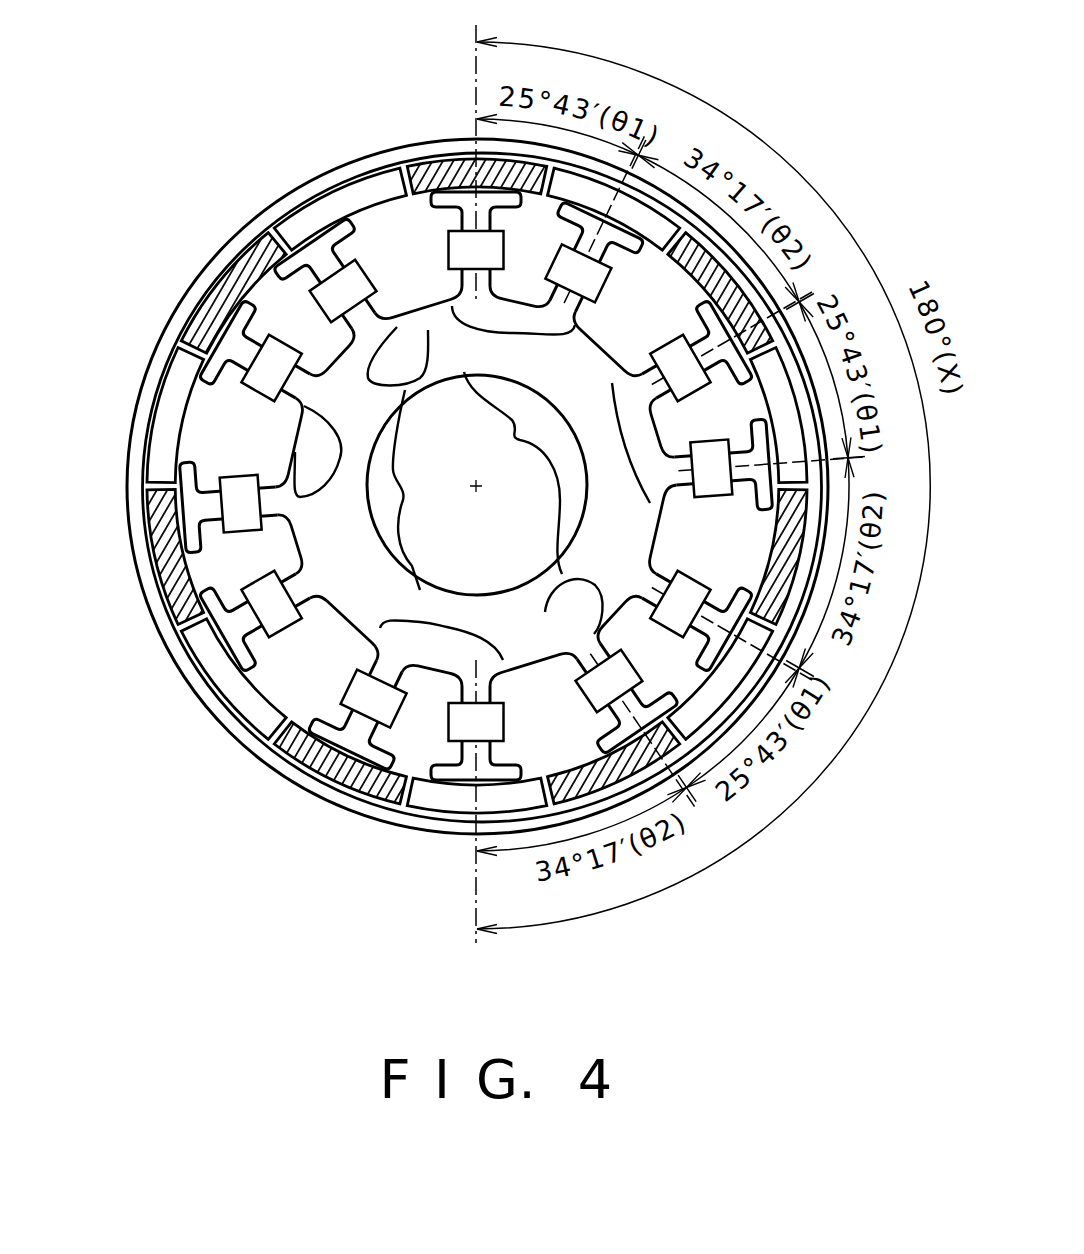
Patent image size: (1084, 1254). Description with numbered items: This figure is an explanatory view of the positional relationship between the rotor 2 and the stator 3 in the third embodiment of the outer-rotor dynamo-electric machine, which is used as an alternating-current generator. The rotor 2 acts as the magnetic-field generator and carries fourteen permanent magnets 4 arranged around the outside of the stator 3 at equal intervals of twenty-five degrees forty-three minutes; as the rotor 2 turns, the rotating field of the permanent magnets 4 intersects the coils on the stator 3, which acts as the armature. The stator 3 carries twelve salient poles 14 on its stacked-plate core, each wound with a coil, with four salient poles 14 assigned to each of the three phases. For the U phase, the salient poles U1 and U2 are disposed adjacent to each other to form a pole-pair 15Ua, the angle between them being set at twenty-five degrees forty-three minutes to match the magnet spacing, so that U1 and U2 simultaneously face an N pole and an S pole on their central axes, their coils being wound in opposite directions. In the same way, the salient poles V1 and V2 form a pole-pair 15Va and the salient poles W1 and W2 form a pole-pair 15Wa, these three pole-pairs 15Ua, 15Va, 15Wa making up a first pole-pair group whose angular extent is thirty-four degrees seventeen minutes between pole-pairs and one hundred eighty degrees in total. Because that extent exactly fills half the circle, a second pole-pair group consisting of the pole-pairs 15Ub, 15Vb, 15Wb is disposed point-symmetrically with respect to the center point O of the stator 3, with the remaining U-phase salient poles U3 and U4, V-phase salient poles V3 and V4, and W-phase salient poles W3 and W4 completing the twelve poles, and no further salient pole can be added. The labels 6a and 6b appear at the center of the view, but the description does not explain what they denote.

The rotor 2 is at (233, 723).
The stator 3 is at (342, 438).
The permanent magnet 4 is at (350, 163).
The salient pole 14 is at (314, 258).
The rotor magnet portion 6a is at (477, 483).
The rotor magnet portion 6b is at (424, 490).
The center point O is at (487, 500).
The pole-pair 15Ua is at (513, 333).
The pole-pair 15Ub is at (447, 627).
The pole-pair 15Va is at (622, 443).
The pole-pair 15Vb is at (325, 451).
The pole-pair 15Wa is at (550, 545).
The pole-pair 15Wb is at (428, 330).
The salient pole U1 is at (476, 239).
The salient pole U2 is at (603, 221).
The coil U3 is at (476, 733).
The coil U4 is at (369, 709).
The salient pole V1 is at (731, 339).
The salient pole V2 is at (769, 464).
The coil V3 is at (262, 609).
The coil V4 is at (229, 504).
The salient pole W1 is at (731, 633).
The salient pole W2 is at (641, 729).
The coil W3 is at (262, 362).
The coil W4 is at (336, 282).